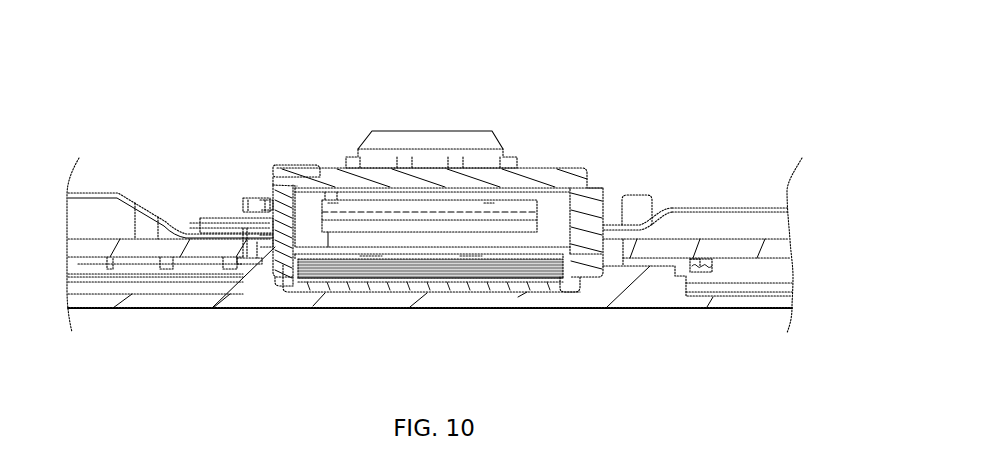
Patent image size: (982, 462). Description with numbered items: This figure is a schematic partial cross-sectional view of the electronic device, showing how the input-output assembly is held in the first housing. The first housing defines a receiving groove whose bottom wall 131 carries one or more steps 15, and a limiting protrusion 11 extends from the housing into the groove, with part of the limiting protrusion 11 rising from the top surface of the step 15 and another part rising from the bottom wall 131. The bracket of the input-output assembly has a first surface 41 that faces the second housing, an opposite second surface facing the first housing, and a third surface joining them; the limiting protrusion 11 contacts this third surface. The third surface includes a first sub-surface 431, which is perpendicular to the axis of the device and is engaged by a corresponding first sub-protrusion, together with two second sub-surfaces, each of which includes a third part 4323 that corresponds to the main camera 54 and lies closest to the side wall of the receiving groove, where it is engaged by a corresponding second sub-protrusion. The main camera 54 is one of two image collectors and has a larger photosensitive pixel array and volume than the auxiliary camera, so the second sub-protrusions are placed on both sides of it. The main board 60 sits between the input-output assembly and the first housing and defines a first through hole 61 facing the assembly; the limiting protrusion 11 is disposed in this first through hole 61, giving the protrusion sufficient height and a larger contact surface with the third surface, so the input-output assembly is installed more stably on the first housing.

The first sub-surface 431 is at (271, 183).
The main camera 54 is at (433, 147).
The first surface 41 is at (556, 166).
The third part 4323 is at (606, 188).
The main board 60 is at (723, 247).
The first through hole 61 is at (266, 238).
The step 15 is at (262, 262).
The limiting protrusion 11 is at (273, 268).
The bottom wall 131 is at (458, 296).